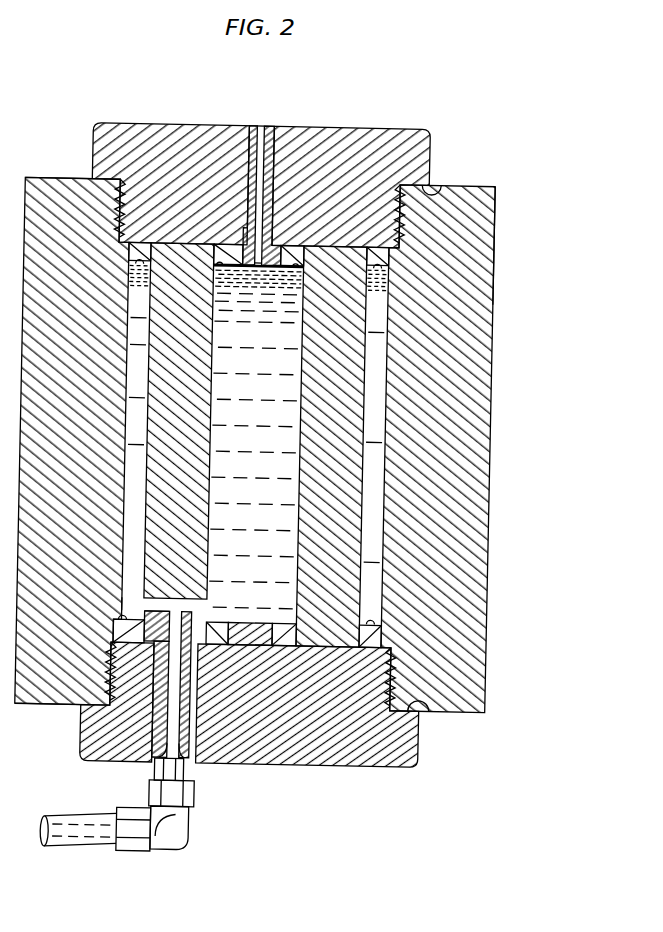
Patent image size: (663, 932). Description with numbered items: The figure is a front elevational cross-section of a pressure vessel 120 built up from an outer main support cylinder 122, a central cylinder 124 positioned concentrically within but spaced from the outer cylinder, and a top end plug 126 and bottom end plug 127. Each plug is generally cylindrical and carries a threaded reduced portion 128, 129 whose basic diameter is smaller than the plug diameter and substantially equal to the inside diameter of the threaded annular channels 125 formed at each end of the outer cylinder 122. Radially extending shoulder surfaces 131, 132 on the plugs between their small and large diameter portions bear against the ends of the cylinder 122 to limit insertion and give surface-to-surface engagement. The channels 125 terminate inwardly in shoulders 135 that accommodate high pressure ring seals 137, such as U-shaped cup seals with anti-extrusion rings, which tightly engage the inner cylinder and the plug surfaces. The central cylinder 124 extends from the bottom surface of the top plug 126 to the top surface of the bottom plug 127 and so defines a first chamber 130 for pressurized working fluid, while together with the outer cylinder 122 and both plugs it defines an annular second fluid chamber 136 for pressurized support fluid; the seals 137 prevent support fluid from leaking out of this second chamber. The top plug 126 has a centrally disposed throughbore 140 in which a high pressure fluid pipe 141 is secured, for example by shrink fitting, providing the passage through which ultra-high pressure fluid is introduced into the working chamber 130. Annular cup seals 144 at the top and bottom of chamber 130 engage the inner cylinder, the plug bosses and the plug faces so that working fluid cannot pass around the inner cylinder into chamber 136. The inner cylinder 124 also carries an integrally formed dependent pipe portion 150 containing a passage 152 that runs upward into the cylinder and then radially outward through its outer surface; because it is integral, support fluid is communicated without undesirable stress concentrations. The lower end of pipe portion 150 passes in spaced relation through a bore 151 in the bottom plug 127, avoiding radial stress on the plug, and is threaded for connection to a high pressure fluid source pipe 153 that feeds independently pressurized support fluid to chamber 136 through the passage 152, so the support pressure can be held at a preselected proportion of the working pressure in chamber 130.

The pressure vessel 120 is at (491, 122).
The main support cylinder 122 is at (489, 328).
The cylinder 124 is at (315, 527).
The annular channels 125 is at (401, 225).
The top end plug 126 is at (392, 125).
The bottom end plug 127 is at (375, 765).
The threaded reduced portion 128 is at (140, 200).
The threaded reduced portion 129 is at (107, 706).
The first chamber 130 is at (236, 475).
The shoulder surface 131 is at (434, 182).
The shoulder surface 132 is at (430, 709).
The shoulders 135 is at (383, 262).
The second fluid chamber 136 is at (375, 444).
The ring seals 137 is at (364, 260).
The throughbore 140 is at (249, 125).
The high pressure fluid pipe 141 is at (259, 125).
The annular cup seals 144 is at (212, 266).
The pipe portion 150 is at (194, 778).
The bore 151 is at (160, 773).
The passage 152 is at (160, 605).
The fluid source pipe 153 is at (83, 851).